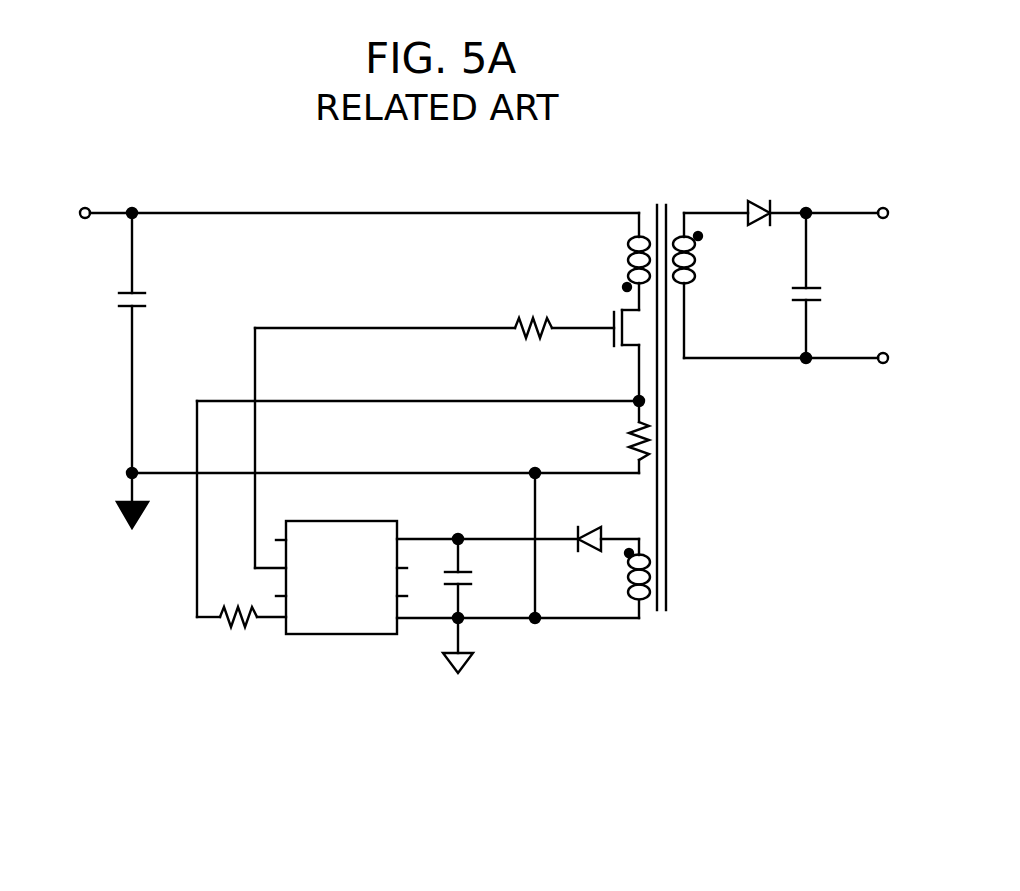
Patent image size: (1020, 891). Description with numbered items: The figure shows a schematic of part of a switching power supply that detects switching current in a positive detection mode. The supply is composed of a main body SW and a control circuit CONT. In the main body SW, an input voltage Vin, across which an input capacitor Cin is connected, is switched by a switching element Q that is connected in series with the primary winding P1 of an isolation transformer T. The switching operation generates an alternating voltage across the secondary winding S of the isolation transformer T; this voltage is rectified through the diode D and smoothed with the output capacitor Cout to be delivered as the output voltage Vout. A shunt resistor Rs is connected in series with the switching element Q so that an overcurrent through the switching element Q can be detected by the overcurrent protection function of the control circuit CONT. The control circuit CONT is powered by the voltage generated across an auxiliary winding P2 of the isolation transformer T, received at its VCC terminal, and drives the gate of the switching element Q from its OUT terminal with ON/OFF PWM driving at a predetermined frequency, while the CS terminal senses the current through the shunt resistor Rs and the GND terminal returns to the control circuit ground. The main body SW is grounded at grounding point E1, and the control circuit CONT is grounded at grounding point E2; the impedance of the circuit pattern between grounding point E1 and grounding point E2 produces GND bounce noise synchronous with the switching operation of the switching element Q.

The input voltage Vin is at (357, 231).
The input capacitor Cin is at (156, 343).
The grounding point of the main body E1 is at (115, 499).
The isolation transformer T is at (662, 389).
The primary winding P1 is at (621, 261).
The switching element Q is at (447, 351).
The shunt resistor Rs is at (616, 434).
The control circuit CONT is at (341, 562).
The power supply terminal of control circuit VCC is at (364, 541).
The output terminal of control circuit OUT is at (315, 570).
The current sense terminal of control circuit CS is at (307, 620).
The ground terminal of control circuit GND is at (364, 620).
The grounding point of the control circuit E2 is at (477, 649).
The auxiliary winding P2 is at (614, 572).
The secondary winding S is at (695, 285).
The diode D is at (745, 197).
The output capacitor Cout is at (839, 285).
The output voltage Vout is at (795, 285).
The main body of the switching power supply SW is at (724, 430).